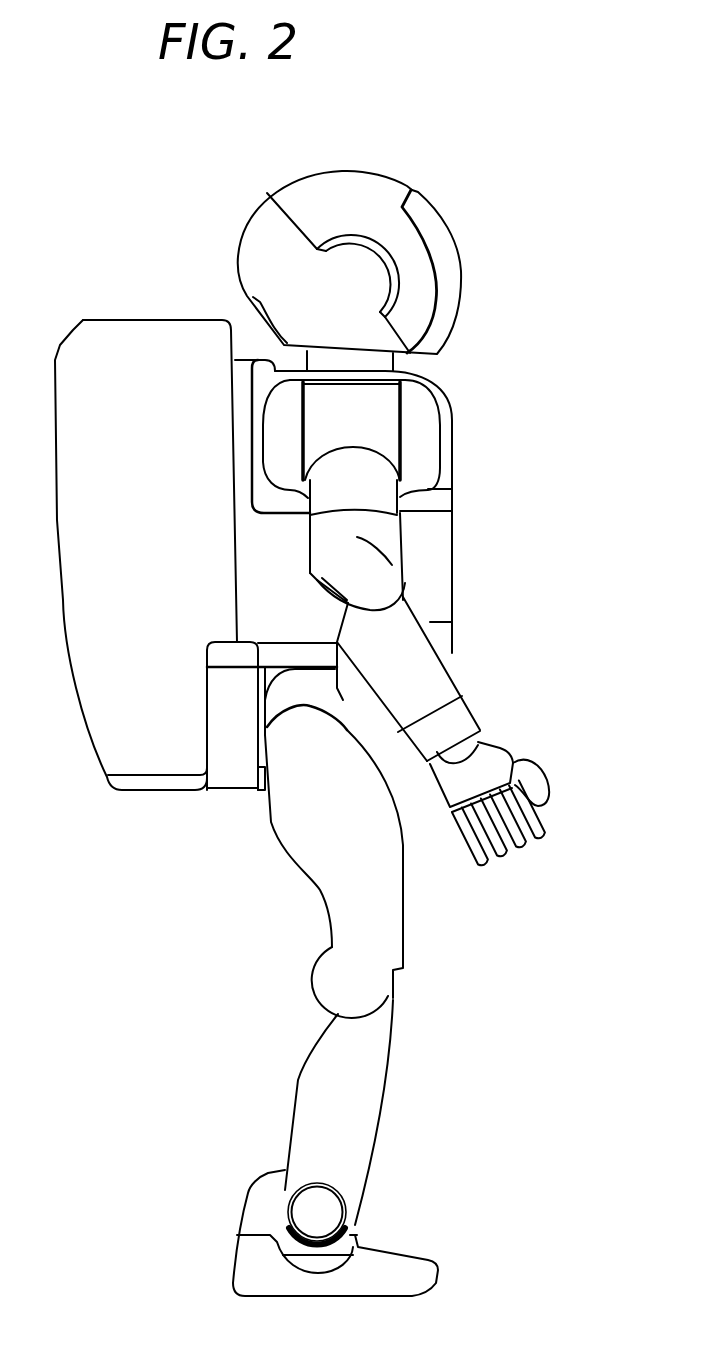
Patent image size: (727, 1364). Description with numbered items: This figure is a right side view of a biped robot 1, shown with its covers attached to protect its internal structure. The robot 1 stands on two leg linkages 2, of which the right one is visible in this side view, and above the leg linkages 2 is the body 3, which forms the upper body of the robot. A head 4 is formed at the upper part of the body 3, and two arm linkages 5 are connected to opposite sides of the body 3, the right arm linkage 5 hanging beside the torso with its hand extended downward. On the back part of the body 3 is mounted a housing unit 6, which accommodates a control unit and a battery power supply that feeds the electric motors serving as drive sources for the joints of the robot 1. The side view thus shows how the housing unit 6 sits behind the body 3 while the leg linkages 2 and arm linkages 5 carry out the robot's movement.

The robot 1 is at (495, 422).
The leg linkage 2 is at (425, 987).
The body 3 is at (420, 565).
The head 4 is at (308, 171).
The arm linkage 5 is at (475, 676).
The housing unit 6 is at (104, 320).